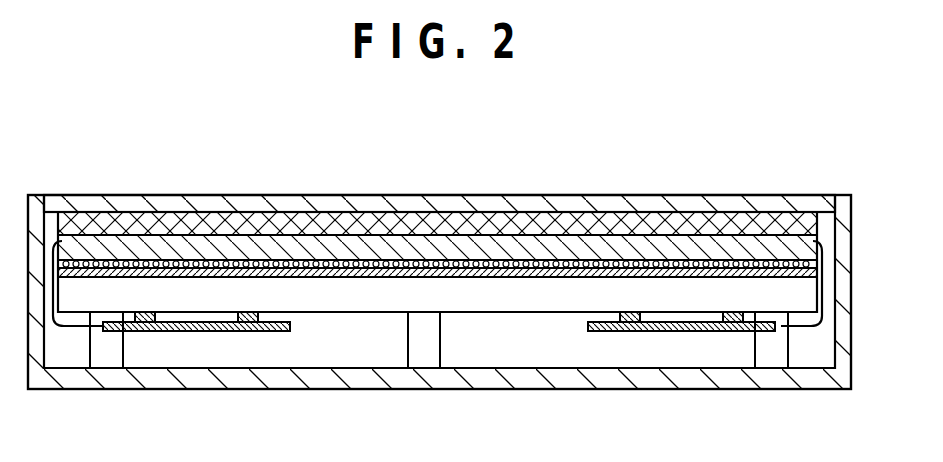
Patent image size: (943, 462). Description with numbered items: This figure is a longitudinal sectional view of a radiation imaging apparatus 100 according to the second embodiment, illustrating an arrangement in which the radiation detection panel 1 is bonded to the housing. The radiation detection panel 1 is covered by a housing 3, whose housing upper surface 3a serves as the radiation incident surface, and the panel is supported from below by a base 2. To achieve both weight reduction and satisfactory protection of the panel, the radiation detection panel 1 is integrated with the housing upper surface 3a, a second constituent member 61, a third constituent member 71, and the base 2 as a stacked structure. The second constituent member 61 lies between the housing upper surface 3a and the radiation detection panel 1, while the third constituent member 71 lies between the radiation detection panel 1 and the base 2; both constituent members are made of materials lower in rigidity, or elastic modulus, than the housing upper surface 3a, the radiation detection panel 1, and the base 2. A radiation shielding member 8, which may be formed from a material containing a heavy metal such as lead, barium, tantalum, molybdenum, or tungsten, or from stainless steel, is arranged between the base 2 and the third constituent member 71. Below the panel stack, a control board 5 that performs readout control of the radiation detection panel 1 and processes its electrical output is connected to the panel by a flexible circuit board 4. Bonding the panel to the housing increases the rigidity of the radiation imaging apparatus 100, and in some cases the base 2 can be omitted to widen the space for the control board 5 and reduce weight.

The radiation imaging apparatus 100 is at (118, 147).
The radiation detection panel 1 is at (76, 238).
The base 2 is at (78, 300).
The housing 3 is at (846, 195).
The housing upper surface 3a is at (773, 201).
The flexible circuit board 4 is at (56, 332).
The control board 5 is at (198, 333).
The radiation shielding member 8 is at (431, 262).
The second constituent member 61 is at (300, 214).
The third constituent member 71 is at (368, 250).